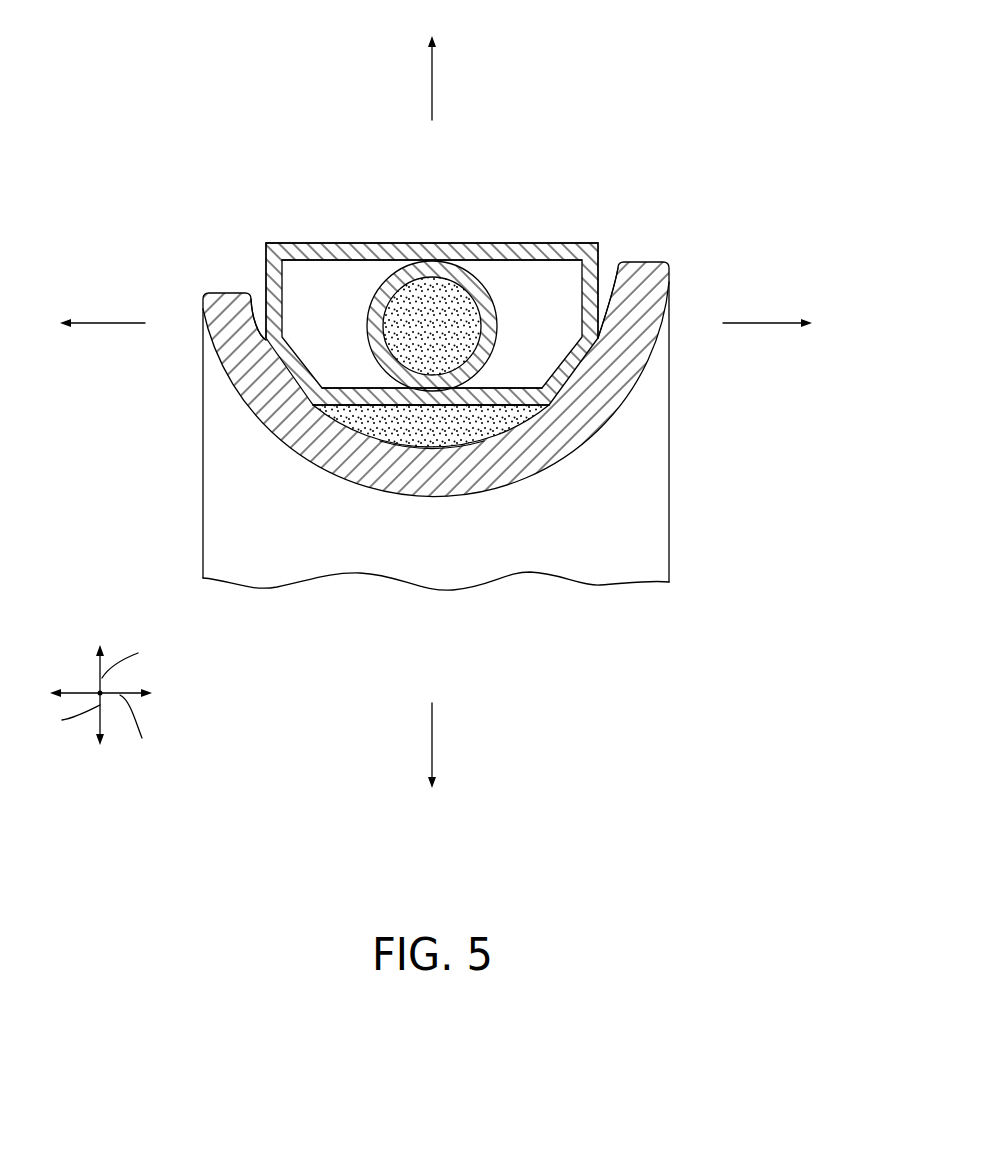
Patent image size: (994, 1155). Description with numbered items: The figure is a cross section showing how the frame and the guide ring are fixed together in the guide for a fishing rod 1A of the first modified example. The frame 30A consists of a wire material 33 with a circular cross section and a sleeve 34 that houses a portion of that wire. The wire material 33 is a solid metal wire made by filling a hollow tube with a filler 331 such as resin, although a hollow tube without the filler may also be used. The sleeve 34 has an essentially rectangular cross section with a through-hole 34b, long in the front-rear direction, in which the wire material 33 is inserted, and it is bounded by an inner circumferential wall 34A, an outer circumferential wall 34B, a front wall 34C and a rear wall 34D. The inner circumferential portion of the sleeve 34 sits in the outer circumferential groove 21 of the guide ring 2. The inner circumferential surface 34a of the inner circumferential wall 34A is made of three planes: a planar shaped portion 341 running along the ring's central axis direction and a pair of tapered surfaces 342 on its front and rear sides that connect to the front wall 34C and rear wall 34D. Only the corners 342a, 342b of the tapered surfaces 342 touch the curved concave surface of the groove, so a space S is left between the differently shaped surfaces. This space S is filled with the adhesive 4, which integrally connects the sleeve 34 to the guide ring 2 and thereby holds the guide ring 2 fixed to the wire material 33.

The guide for a fishing rod 1A is at (250, 175).
The guide ring 2 is at (620, 405).
The outer circumferential groove 21 is at (413, 440).
The frame 30A is at (543, 243).
The wire material 33 is at (485, 283).
The filler 331 is at (436, 310).
The sleeve 34 is at (315, 242).
The inner circumferential wall 34A is at (345, 405).
The outer circumferential wall 34B is at (373, 243).
The front wall 34C is at (266, 258).
The rear wall 34D is at (600, 257).
The inner circumferential surface 34a is at (385, 406).
The through-hole 34b is at (352, 266).
The planar shaped portion 341 is at (366, 426).
The tapered surfaces 342 is at (287, 370).
The corner of tapered surface 342a is at (264, 348).
The corner of tapered surface 342b is at (283, 438).
The adhesive 4 is at (490, 417).
The space S is at (463, 428).